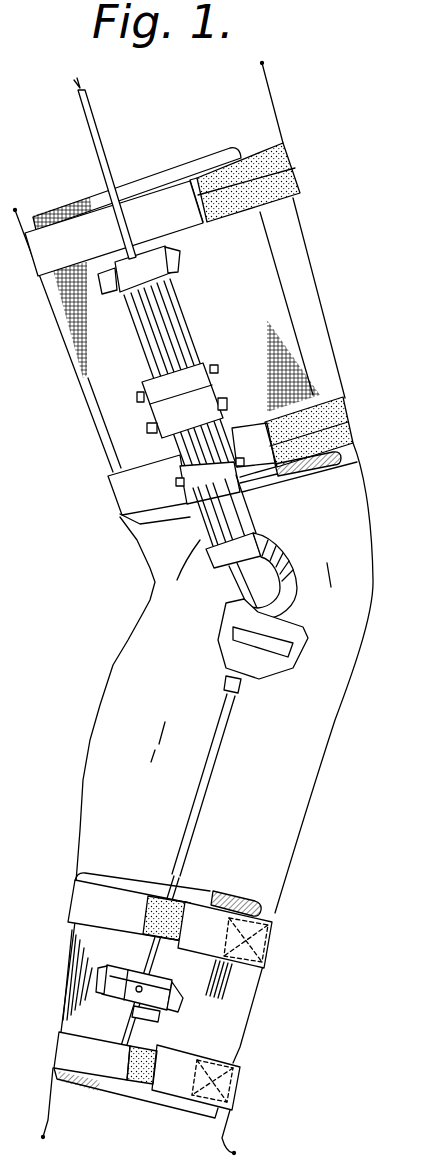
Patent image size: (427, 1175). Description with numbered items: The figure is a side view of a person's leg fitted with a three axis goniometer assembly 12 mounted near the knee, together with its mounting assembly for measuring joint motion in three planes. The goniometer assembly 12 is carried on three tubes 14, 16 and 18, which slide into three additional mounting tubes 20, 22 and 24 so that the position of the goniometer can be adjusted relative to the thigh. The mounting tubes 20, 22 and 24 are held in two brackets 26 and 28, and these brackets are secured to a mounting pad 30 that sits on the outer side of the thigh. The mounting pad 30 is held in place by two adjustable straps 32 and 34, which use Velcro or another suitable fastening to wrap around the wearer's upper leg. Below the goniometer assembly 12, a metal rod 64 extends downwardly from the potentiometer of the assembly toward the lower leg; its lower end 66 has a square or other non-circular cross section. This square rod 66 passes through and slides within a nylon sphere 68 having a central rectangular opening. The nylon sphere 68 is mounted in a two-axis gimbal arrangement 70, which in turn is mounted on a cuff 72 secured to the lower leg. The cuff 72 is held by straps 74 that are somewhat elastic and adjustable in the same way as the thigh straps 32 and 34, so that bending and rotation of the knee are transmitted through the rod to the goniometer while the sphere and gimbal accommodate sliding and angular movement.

The three axis goniometer assembly 12 is at (302, 552).
The tube 14 is at (192, 585).
The tube 16 is at (145, 542).
The tube 18 is at (233, 520).
The mounting tube 20 is at (140, 373).
The mounting tube 22 is at (143, 320).
The mounting tube 24 is at (167, 297).
The bracket 26 is at (198, 254).
The bracket 28 is at (255, 395).
The mounting pad 30 is at (290, 313).
The adjustable strap 32 is at (72, 237).
The adjustable strap 34 is at (132, 488).
The metal rod 64 is at (220, 745).
The lower end of rod 66 is at (173, 868).
The nylon sphere 68 is at (143, 1011).
The two-axis gimbal arrangement 70 is at (182, 988).
The cuff 72 is at (217, 893).
The strap 74 is at (273, 940).